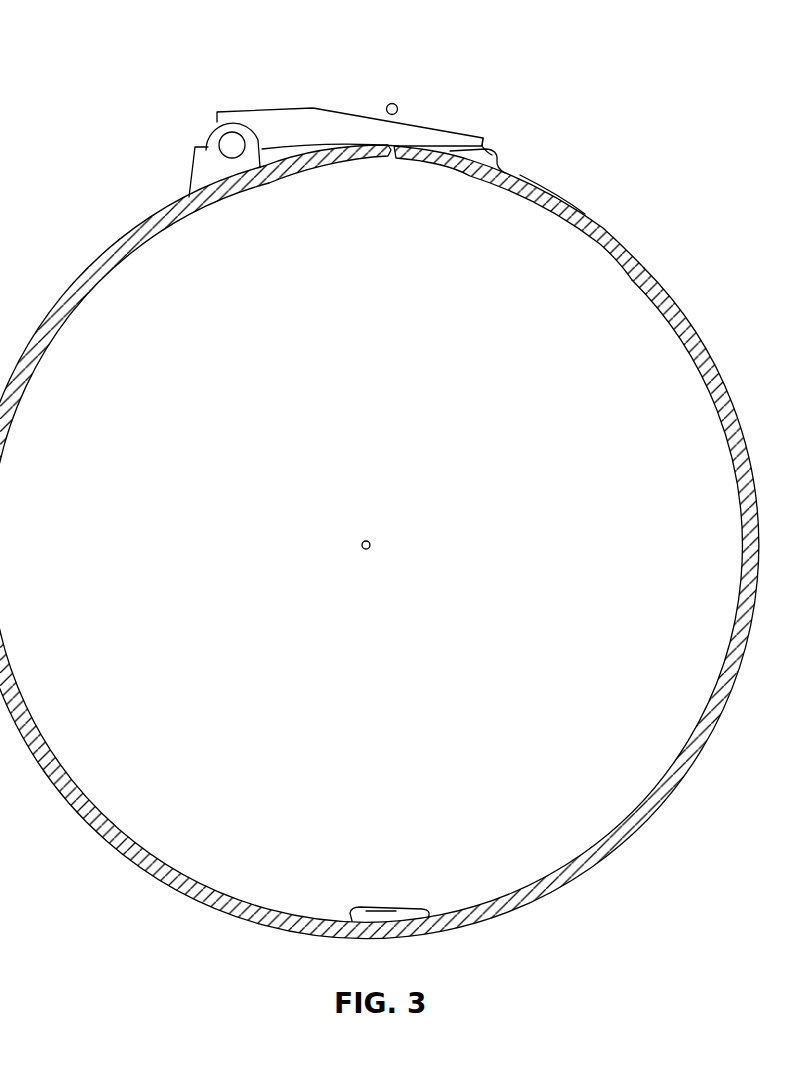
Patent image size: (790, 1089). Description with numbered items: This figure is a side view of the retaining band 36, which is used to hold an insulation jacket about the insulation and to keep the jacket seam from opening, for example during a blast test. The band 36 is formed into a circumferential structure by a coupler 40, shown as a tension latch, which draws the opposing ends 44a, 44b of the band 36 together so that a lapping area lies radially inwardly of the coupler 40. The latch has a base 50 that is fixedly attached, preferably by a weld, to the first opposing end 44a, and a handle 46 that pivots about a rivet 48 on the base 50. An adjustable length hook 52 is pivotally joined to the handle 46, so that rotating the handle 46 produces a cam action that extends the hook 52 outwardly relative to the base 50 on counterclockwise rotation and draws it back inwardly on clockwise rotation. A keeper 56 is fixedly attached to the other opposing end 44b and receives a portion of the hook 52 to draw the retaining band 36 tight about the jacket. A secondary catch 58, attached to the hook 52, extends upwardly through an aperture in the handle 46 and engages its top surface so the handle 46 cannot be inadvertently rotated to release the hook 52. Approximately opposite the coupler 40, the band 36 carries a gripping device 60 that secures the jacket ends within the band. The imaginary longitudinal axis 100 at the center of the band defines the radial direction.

The retaining band 36 is at (200, 906).
The coupler 40 is at (316, 107).
The opposing end of the band 44a is at (315, 148).
The opposing end of the band 44b is at (428, 147).
The handle 46 is at (484, 140).
The rivet 48 is at (226, 142).
The base 50 is at (200, 176).
The adjustable length hook 52 is at (499, 156).
The keeper 56 is at (540, 186).
The secondary catch 58 is at (391, 103).
The gripping device 60 is at (352, 920).
The imaginary longitudinal axis 100 is at (362, 547).